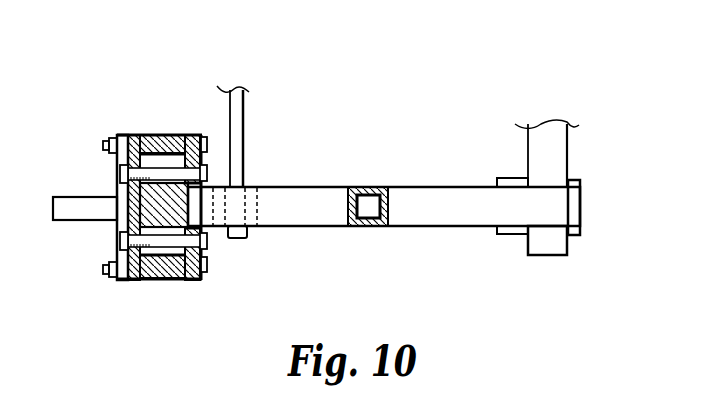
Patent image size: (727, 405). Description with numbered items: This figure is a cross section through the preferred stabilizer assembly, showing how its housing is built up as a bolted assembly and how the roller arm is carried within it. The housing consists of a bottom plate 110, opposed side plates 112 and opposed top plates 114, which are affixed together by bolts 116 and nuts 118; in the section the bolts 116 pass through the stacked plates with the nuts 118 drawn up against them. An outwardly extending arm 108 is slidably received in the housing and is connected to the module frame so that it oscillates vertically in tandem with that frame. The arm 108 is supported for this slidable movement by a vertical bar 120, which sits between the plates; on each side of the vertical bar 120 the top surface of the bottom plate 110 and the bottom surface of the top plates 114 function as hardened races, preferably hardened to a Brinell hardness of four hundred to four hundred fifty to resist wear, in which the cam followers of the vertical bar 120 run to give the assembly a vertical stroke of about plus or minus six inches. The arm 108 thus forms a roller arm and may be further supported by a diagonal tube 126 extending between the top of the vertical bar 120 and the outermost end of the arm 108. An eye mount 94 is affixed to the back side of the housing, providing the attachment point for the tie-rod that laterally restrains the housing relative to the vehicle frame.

The eye mount 94 is at (66, 203).
The arm 108 is at (445, 202).
The bottom plate 110 is at (132, 282).
The side plates 112 is at (167, 280).
The top plates 114 is at (188, 137).
The bolts 116 is at (183, 250).
The nuts 118 is at (120, 240).
The vertical bar 120 is at (163, 200).
The diagonal tube 126 is at (390, 226).